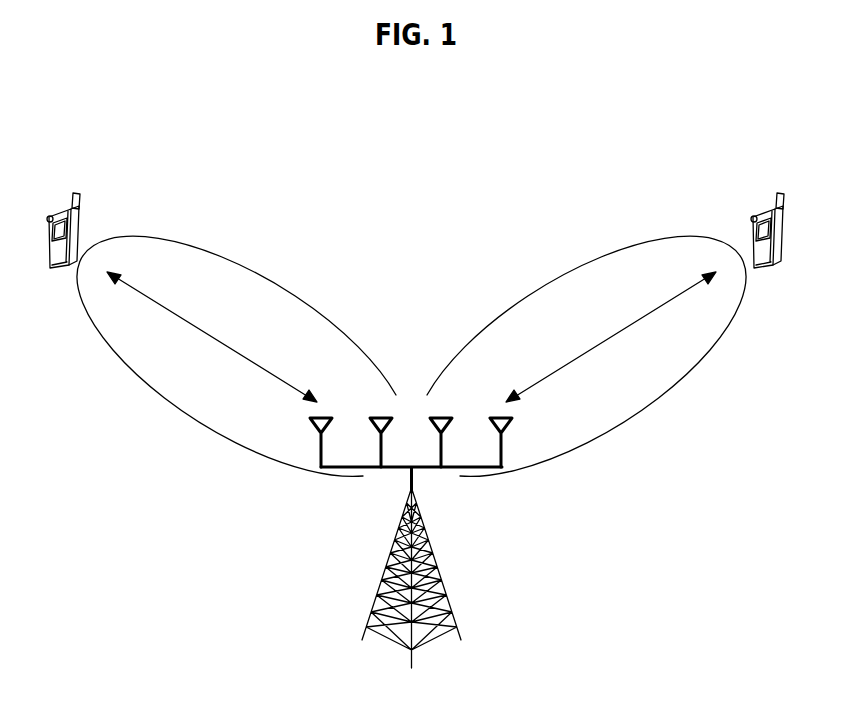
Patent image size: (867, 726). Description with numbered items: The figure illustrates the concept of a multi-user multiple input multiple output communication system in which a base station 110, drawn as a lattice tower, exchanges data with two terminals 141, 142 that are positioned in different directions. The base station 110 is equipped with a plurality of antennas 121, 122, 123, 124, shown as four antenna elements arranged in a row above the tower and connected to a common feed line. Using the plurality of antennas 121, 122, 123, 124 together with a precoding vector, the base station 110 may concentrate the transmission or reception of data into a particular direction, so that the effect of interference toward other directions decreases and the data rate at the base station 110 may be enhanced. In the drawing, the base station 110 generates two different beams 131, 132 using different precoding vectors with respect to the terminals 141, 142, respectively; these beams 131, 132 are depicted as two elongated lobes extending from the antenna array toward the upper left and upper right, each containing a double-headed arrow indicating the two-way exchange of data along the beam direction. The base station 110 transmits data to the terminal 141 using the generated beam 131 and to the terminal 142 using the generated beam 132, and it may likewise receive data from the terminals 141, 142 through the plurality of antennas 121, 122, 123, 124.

The base station 110 is at (440, 593).
The antenna 121 is at (315, 427).
The antenna 122 is at (376, 427).
The antenna 123 is at (447, 427).
The antenna 124 is at (508, 427).
The beam 131 is at (238, 260).
The beam 132 is at (585, 260).
The terminal 141 is at (82, 203).
The terminal 142 is at (750, 212).